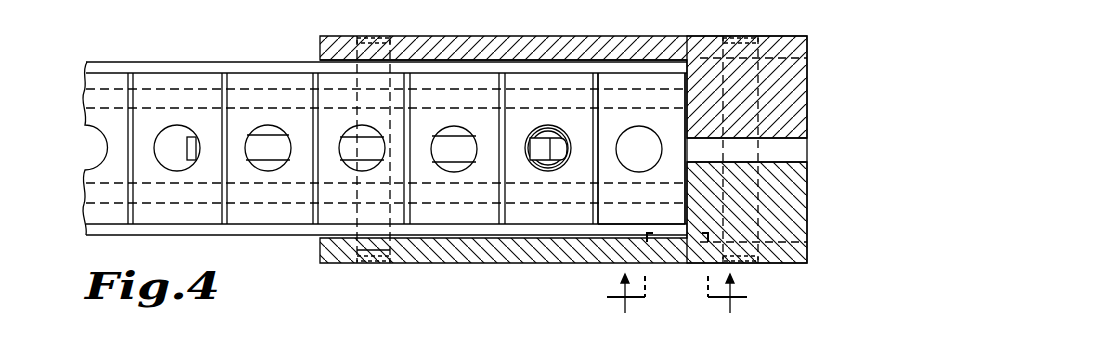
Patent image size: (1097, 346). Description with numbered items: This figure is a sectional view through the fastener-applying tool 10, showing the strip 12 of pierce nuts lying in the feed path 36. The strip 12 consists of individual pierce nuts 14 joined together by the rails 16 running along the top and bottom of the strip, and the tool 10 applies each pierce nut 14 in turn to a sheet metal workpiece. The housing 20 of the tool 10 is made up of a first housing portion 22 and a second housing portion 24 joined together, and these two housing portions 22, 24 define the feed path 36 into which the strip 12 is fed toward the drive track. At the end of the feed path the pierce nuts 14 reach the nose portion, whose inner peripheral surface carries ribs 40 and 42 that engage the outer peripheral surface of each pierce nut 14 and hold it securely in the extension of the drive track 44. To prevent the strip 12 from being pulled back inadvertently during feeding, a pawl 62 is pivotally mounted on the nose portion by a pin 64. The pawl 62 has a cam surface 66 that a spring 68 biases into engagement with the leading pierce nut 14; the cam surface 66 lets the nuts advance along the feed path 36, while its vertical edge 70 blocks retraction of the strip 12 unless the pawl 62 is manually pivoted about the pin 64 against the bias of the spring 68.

The tool 10 is at (840, 172).
The strip of pierce nuts 12 is at (80, 116).
The pierce nut 14 is at (250, 80).
The rails 16 is at (97, 63).
The housing 20 is at (812, 128).
The first housing portion 22 is at (807, 70).
The second housing portion 24 is at (807, 217).
The feed path 36 is at (334, 63).
The rib 40 is at (683, 153).
The rib 42 is at (600, 148).
The extension of the drive track 44 is at (678, 210).
The pawl 62 is at (271, 166).
The pin 64 is at (376, 252).
The cam surface 66 is at (540, 143).
The spring 68 is at (548, 168).
The vertical edge 70 is at (558, 158).